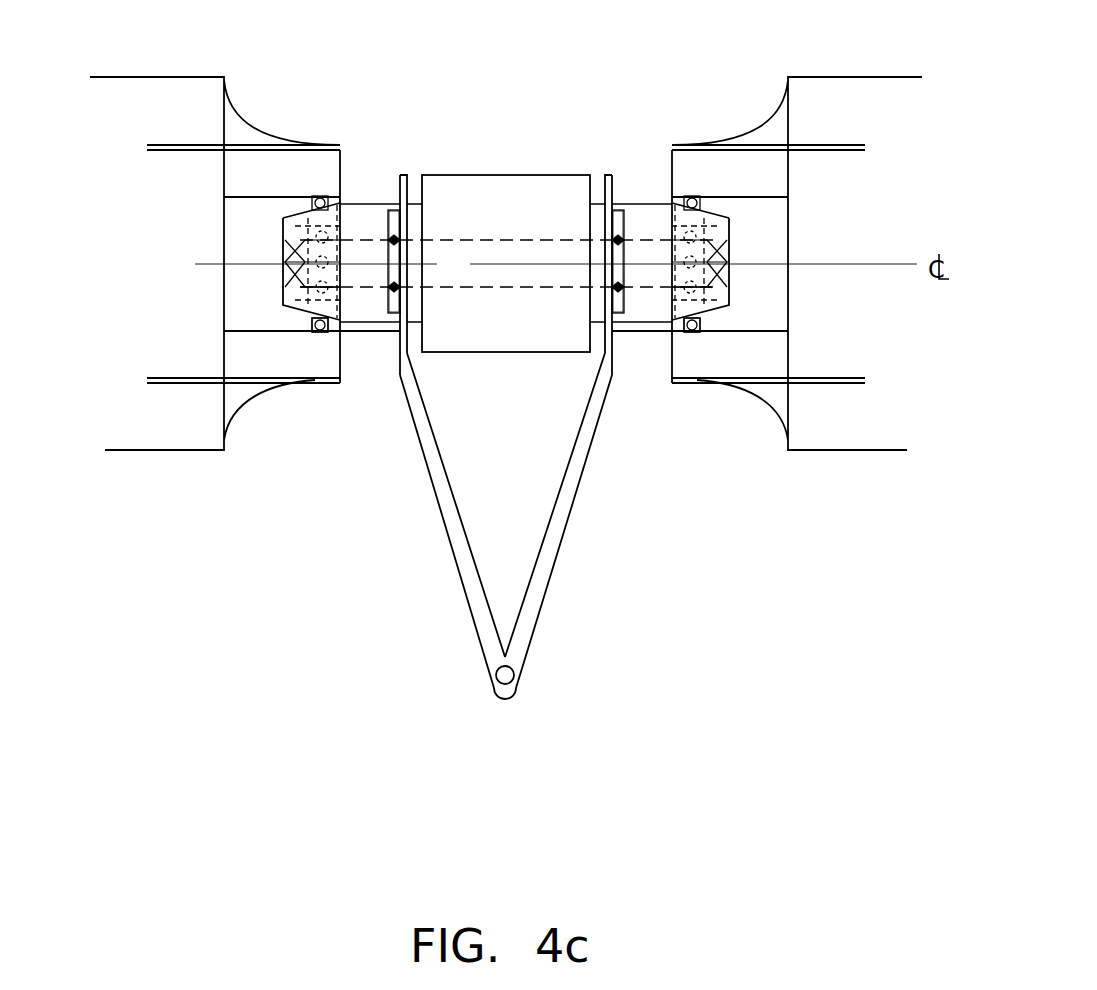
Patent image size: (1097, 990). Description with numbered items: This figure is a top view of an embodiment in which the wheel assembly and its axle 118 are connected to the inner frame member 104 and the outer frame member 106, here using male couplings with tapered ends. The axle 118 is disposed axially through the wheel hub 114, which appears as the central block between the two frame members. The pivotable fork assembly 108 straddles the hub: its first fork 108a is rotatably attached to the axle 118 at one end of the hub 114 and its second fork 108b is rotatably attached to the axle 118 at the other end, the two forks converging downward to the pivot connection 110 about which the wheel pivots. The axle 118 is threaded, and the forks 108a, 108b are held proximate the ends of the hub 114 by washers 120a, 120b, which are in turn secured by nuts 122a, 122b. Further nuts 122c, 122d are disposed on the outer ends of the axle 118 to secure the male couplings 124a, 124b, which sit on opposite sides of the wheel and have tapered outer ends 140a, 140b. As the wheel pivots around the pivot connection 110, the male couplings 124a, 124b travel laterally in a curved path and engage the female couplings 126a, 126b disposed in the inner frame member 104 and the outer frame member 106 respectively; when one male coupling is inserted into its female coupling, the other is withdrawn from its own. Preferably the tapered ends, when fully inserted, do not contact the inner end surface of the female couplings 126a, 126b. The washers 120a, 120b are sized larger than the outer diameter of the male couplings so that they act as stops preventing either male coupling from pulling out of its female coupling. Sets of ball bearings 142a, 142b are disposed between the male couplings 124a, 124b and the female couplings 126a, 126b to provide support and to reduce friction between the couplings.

The inner frame member 104 is at (866, 122).
The outer frame member 106 is at (178, 122).
The fork assembly 108 is at (549, 376).
The first fork 108a is at (414, 204).
The second fork 108b is at (597, 204).
The pivot connection 110 is at (514, 675).
The wheel hub 114 is at (535, 185).
The axle 118 is at (539, 287).
The washer 120a is at (402, 175).
The washer 120b is at (609, 175).
The nut 122a is at (393, 215).
The nut 122b is at (619, 212).
The nut 122c is at (290, 262).
The nut 122d is at (735, 259).
The male coupling 124a is at (388, 232).
The male coupling 124b is at (668, 226).
The female coupling 126a is at (247, 236).
The female coupling 126b is at (775, 228).
The tapered outer end 140a is at (312, 310).
The tapered outer end 140b is at (700, 313).
The ball bearings 142a is at (337, 286).
The ball bearings 142b is at (690, 285).